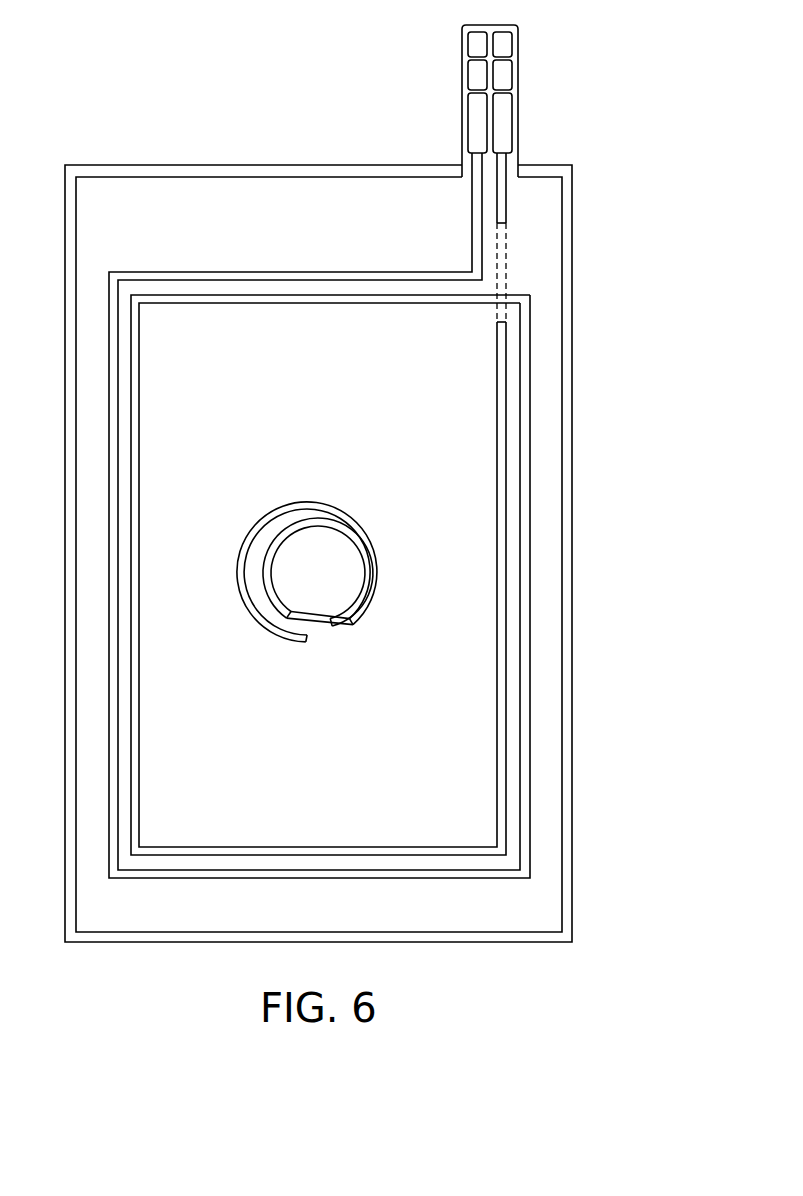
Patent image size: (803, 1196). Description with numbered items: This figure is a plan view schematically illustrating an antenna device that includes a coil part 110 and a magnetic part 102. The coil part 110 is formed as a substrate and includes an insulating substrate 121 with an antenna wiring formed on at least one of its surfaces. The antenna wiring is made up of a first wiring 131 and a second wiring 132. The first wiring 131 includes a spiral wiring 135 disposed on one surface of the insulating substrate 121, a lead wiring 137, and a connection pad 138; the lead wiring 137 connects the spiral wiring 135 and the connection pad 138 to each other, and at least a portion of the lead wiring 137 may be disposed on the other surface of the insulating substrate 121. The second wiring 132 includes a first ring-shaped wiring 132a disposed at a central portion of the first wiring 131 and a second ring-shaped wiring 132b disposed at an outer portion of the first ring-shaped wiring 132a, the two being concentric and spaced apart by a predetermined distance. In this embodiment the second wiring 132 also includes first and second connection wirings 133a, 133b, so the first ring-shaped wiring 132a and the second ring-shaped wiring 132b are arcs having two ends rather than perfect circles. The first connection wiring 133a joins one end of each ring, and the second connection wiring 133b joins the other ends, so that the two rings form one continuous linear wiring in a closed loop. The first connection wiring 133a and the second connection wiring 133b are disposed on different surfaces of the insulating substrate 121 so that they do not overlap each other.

The coil part 110 is at (568, 202).
The magnetic part 102 is at (573, 280).
The insulating substrate 121 is at (545, 826).
The first wiring 131 is at (447, 83).
The spiral wiring 135 is at (330, 272).
The lead wiring 137 is at (475, 192).
The connection pad 138 is at (478, 118).
The second wiring 132 is at (476, 623).
The first ring-shaped wiring 132a is at (367, 563).
The second ring-shaped wiring 132b is at (378, 607).
The first connection wiring 133a is at (333, 643).
The second connection wiring 133b is at (312, 645).